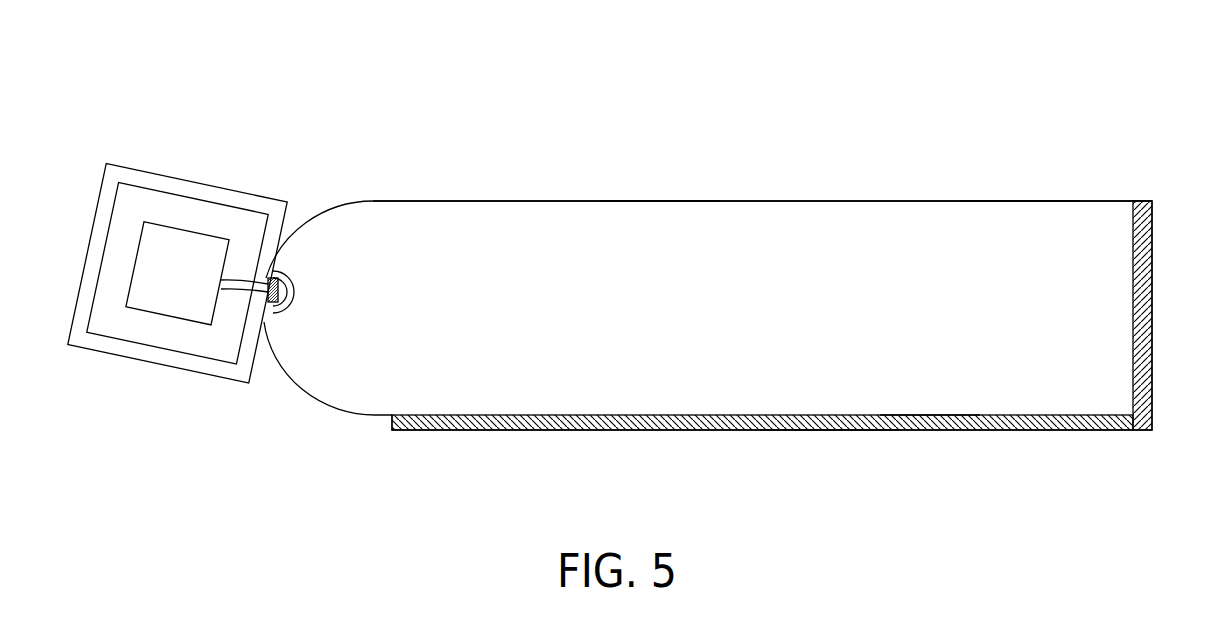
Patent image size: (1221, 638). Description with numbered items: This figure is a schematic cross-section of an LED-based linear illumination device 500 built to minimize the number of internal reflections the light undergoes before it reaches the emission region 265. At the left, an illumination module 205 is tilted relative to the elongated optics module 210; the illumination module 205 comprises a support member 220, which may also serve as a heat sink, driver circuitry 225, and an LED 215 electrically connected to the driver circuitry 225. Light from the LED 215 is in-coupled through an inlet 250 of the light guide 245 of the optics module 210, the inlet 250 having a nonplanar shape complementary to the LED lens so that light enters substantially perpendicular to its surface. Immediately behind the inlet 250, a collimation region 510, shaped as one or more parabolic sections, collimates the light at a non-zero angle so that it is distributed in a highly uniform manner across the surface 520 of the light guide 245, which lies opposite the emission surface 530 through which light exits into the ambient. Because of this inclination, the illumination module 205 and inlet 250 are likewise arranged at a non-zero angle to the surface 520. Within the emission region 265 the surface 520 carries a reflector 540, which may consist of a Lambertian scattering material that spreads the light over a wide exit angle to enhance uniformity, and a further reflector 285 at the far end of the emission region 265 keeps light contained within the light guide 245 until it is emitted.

The illumination device 500 is at (298, 52).
The illumination module 205 is at (167, 272).
The support member 220 is at (183, 370).
The driver circuitry 225 is at (145, 295).
The LED 215 is at (271, 277).
The inlet 250 is at (263, 323).
The optics module 210 is at (737, 293).
The collimation region 510 is at (462, 227).
The emission surface 530 is at (652, 201).
The light guide 245 is at (1013, 216).
The reflector 285 is at (1153, 255).
The surface 520 is at (662, 415).
The reflector 540 is at (826, 432).
The emission region 265 is at (928, 393).